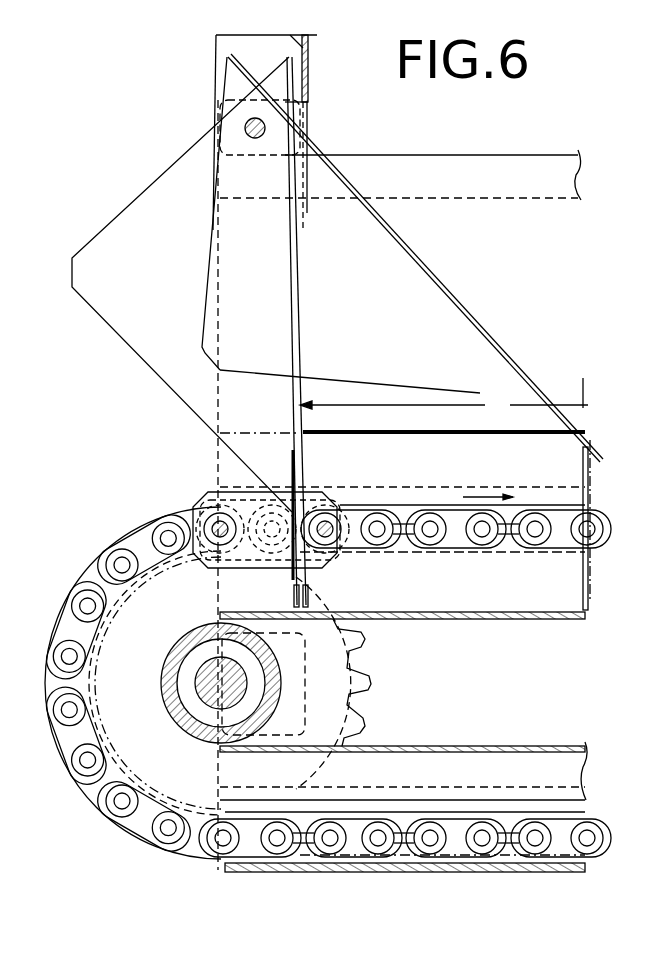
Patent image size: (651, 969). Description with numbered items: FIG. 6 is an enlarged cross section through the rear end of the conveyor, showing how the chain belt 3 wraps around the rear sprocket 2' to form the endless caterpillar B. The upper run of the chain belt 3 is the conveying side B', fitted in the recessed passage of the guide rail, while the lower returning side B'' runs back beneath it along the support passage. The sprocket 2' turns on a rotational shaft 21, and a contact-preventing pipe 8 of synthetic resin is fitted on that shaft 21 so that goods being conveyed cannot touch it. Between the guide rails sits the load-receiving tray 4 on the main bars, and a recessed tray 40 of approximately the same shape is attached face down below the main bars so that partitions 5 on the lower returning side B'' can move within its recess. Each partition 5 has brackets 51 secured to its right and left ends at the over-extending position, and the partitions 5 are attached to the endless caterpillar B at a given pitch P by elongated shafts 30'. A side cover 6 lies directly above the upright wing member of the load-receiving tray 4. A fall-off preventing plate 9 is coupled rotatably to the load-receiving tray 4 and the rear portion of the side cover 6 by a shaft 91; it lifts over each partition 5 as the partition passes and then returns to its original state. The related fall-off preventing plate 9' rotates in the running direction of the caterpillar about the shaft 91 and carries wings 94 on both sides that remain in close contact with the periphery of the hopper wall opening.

The shaft 91 is at (218, 118).
The wings 94 is at (118, 362).
The side cover 6 is at (413, 217).
The fall-off preventing plate 9' is at (320, 332).
The fall-off preventing plate 9 is at (415, 258).
The pitch P is at (444, 405).
The conveying side B' is at (424, 500).
The elongated shafts 30' is at (261, 509).
The brackets 51 is at (278, 497).
The partitions 5 is at (592, 592).
The chain belt 3 is at (63, 622).
The endless caterpillar B is at (119, 655).
The contact-preventing pipe 8 is at (165, 686).
The rotational shaft 21 is at (205, 700).
The sprocket 2' is at (352, 683).
The load-receiving tray 4 is at (468, 612).
The recessed tray 40 is at (443, 760).
The lower returning side B'' is at (415, 821).